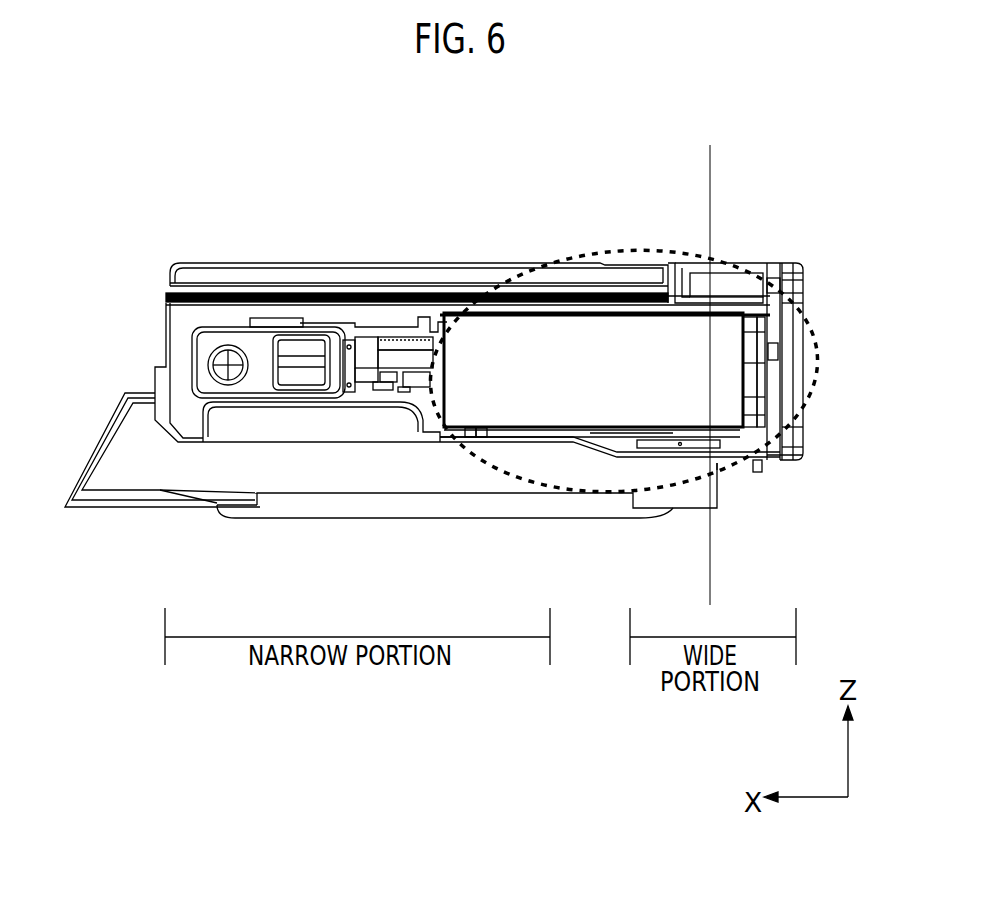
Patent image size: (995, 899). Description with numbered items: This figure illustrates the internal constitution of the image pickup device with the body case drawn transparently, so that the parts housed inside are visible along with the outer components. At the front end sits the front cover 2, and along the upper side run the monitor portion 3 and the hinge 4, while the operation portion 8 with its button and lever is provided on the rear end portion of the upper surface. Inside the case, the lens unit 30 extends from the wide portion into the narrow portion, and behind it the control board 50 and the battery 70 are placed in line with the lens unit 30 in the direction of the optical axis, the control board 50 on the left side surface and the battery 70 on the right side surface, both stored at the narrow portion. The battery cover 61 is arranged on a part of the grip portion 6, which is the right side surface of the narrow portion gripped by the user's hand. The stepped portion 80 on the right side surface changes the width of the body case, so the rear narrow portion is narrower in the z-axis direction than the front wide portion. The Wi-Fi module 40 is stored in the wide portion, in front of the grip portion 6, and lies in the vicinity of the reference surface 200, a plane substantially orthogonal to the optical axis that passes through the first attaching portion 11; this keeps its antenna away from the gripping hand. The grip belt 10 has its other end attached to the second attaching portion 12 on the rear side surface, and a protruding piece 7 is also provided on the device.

The front cover 2 is at (795, 263).
The monitor portion 3 is at (563, 268).
The hinge 4 is at (684, 250).
The grip portion 6 is at (500, 447).
The protruding piece 7 is at (760, 473).
The operation portion 8 is at (186, 339).
The grip belt 10 is at (540, 507).
The first attaching portion 11 is at (717, 466).
The second attaching portion 12 is at (155, 380).
The lens unit 30 is at (508, 325).
The Wi-Fi module 40 is at (668, 450).
The control board 50 is at (370, 333).
The battery cover 61 is at (363, 445).
The battery 70 is at (317, 413).
The stepped portion 80 is at (597, 455).
The reference surface 200 is at (709, 163).